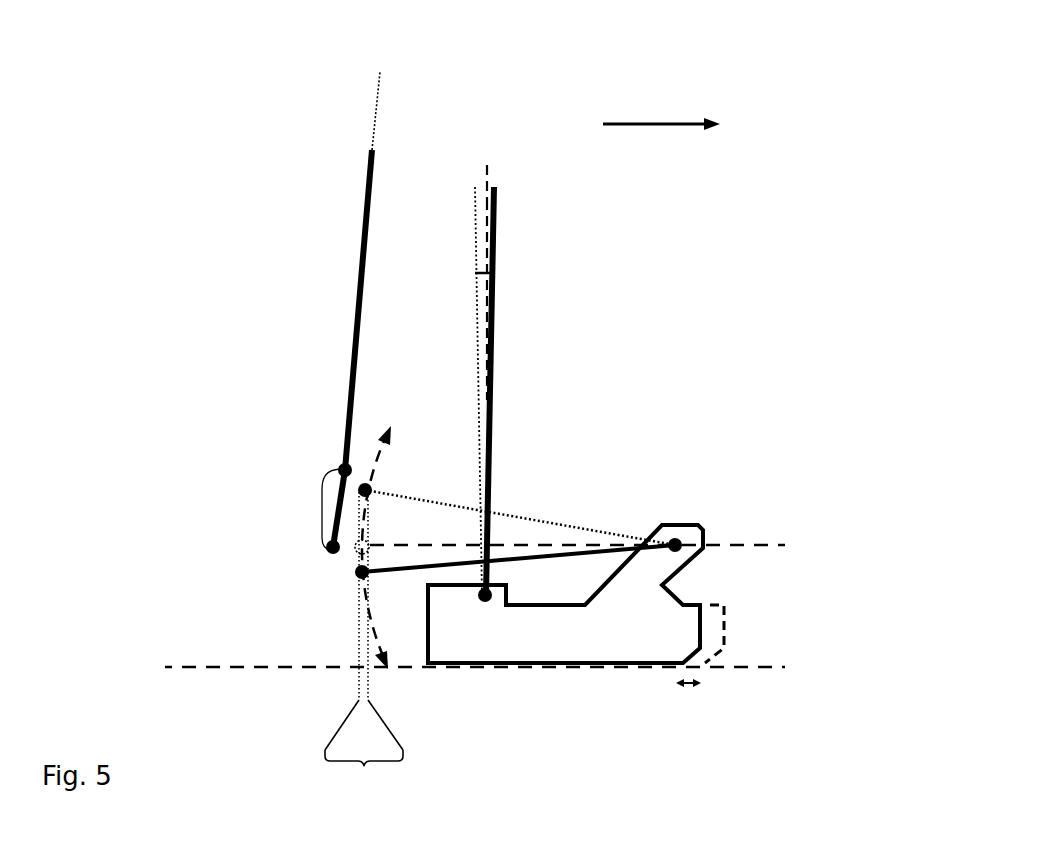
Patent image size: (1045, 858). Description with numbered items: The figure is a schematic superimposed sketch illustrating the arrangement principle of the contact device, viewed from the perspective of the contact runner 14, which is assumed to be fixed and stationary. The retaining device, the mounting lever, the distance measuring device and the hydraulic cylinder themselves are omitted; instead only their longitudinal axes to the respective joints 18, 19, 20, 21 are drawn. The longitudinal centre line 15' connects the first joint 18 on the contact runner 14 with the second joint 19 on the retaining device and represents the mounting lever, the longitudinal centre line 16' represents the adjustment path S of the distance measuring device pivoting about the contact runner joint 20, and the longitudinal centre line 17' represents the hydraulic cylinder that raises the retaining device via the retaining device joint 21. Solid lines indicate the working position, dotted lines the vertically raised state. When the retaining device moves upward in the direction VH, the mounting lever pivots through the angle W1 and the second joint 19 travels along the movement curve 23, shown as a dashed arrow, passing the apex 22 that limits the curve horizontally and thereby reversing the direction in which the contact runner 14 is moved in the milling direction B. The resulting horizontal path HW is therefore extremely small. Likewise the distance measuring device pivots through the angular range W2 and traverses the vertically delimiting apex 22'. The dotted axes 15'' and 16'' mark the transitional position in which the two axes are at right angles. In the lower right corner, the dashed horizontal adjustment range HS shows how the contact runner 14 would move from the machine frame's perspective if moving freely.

The contact runner 14 is at (676, 622).
The longitudinal centre line of the mounting lever 15' is at (520, 502).
The axis of the mounting lever in transitional position 15'' is at (600, 547).
The longitudinal centre line of the distance measuring device 16' is at (517, 391).
The axis of the distance measuring device in transitional position 16'' is at (482, 168).
The longitudinal centre line of the hydraulic cylinder 17' is at (329, 270).
The first joint 18 is at (677, 546).
The second joint 19 is at (367, 490).
The contact runner joint 20 is at (473, 598).
The retaining device joint 21 is at (333, 545).
The apex 22 is at (302, 584).
The apex 22' is at (523, 244).
The movement curve 23 is at (393, 430).
The milling direction B is at (678, 125).
The adjustment path S is at (493, 357).
The angle W1 is at (545, 555).
The angular range W2 is at (494, 273).
The vertical direction VH is at (305, 514).
The horizontal adjustment range HS is at (696, 662).
The horizontal path HW is at (364, 756).